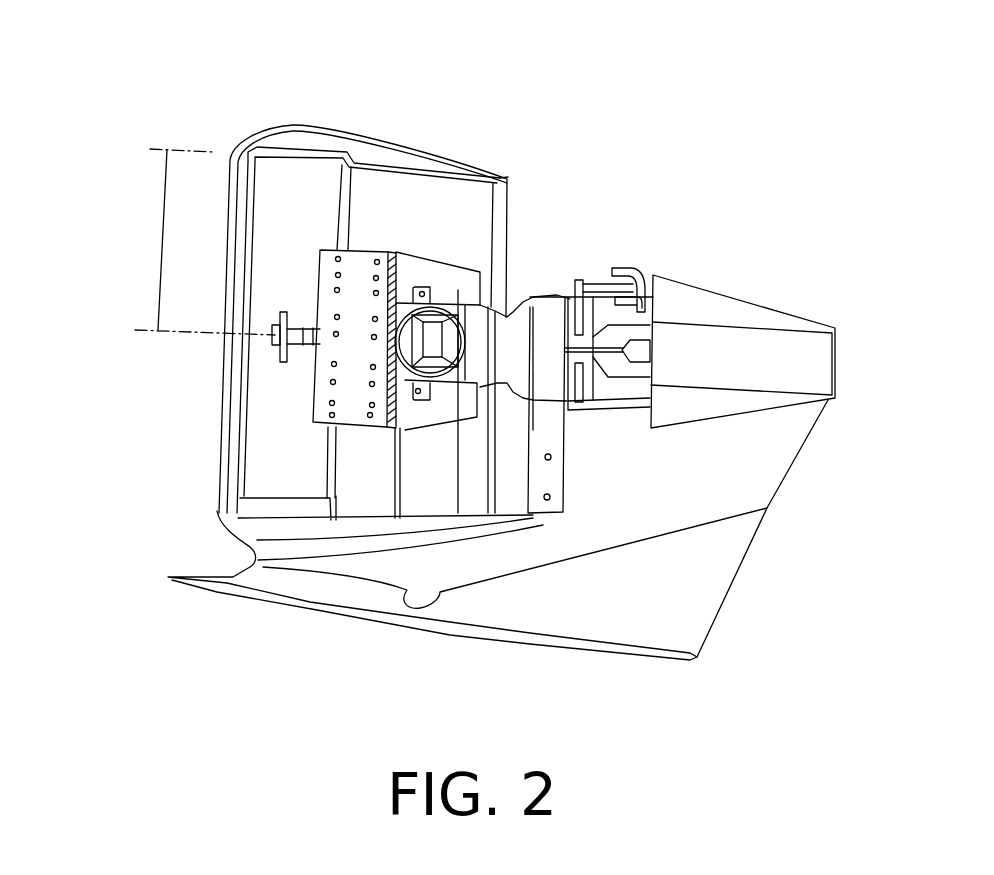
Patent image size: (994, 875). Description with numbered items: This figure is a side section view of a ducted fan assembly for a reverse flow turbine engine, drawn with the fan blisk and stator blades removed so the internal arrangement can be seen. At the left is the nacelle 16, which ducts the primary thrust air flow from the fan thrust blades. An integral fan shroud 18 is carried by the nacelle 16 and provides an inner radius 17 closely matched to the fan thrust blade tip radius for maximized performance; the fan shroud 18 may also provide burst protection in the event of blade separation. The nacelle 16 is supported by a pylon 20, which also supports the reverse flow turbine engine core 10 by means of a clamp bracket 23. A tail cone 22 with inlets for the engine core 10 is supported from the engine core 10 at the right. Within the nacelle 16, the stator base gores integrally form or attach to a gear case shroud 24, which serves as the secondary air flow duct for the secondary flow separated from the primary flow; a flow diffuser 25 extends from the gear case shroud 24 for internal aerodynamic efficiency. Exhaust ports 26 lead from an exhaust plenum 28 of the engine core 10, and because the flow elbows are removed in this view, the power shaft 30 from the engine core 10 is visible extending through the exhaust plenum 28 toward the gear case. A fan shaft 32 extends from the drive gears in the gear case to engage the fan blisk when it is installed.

The reverse flow turbine engine core 10 is at (550, 298).
The nacelle 16 is at (442, 158).
The inner radius 17 is at (163, 233).
The integral fan shroud 18 is at (303, 153).
The pylon 20 is at (623, 517).
The tail cone 22 is at (734, 312).
The clamp bracket 23 is at (553, 433).
The gear case shroud 24 is at (360, 263).
The flow diffuser 25 is at (458, 277).
The exhaust ports 26 is at (455, 378).
The exhaust plenum 28 is at (428, 367).
The power shaft 30 is at (430, 343).
The fan shaft 32 is at (302, 338).